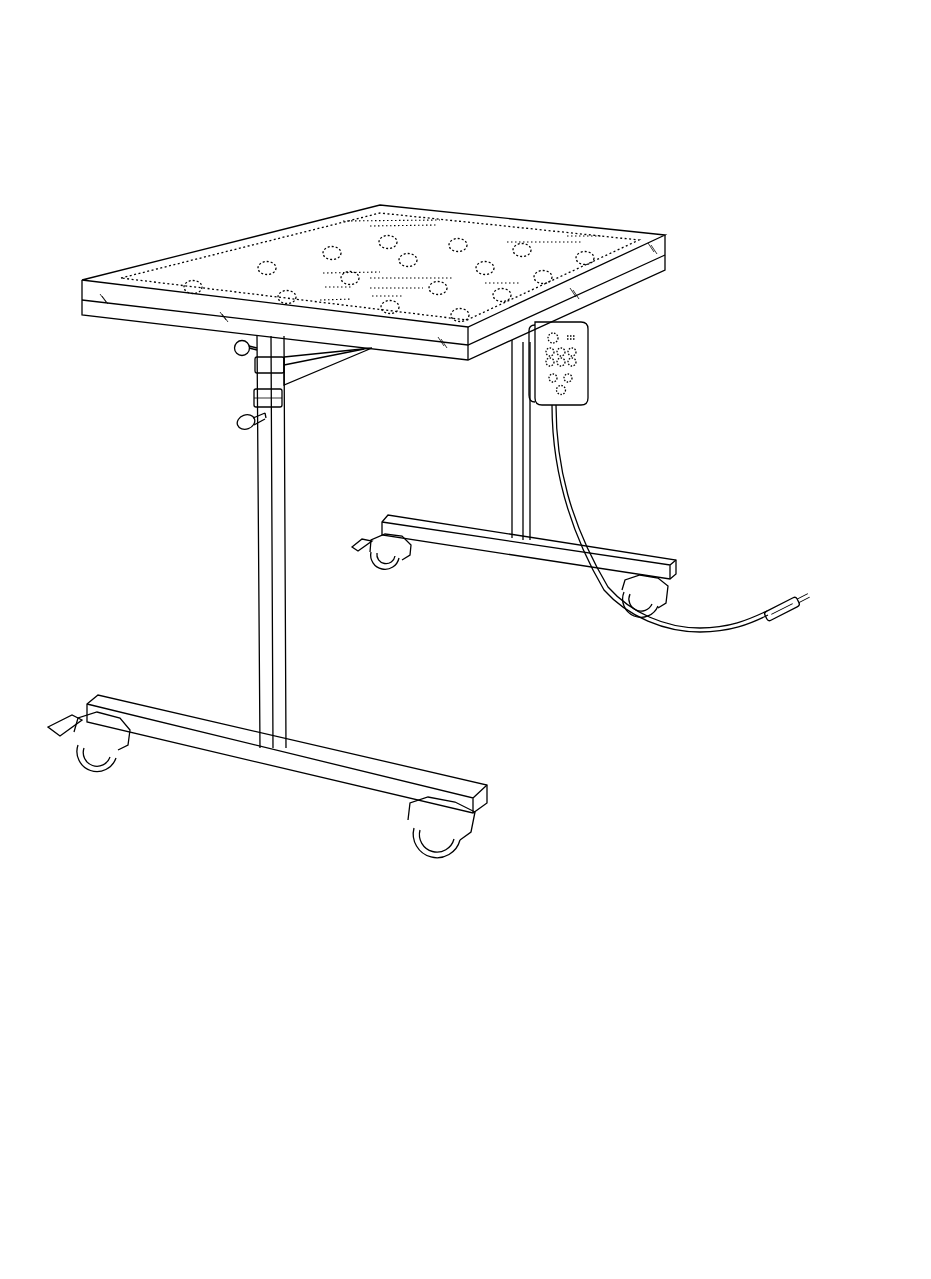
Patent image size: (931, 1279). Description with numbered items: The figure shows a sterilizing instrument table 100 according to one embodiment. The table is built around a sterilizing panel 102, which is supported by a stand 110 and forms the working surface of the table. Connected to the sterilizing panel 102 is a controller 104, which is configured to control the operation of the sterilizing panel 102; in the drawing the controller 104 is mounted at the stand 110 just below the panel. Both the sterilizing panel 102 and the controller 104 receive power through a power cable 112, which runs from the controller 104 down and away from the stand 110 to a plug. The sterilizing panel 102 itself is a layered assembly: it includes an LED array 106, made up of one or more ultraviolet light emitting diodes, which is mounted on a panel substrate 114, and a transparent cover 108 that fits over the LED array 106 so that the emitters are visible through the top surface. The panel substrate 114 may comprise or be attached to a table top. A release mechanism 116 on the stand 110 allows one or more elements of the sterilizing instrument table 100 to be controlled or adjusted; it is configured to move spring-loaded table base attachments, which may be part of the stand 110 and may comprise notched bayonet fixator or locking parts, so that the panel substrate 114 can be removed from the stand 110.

The sterilizing instrument table 100 is at (784, 82).
The sterilizing panel 102 is at (152, 262).
The controller 104 is at (590, 390).
The LED array 106 is at (447, 243).
The transparent cover 108 is at (364, 243).
The stand 110 is at (263, 468).
The power cable 112 is at (745, 627).
The panel substrate 114 is at (157, 320).
The release mechanism 116 is at (234, 361).